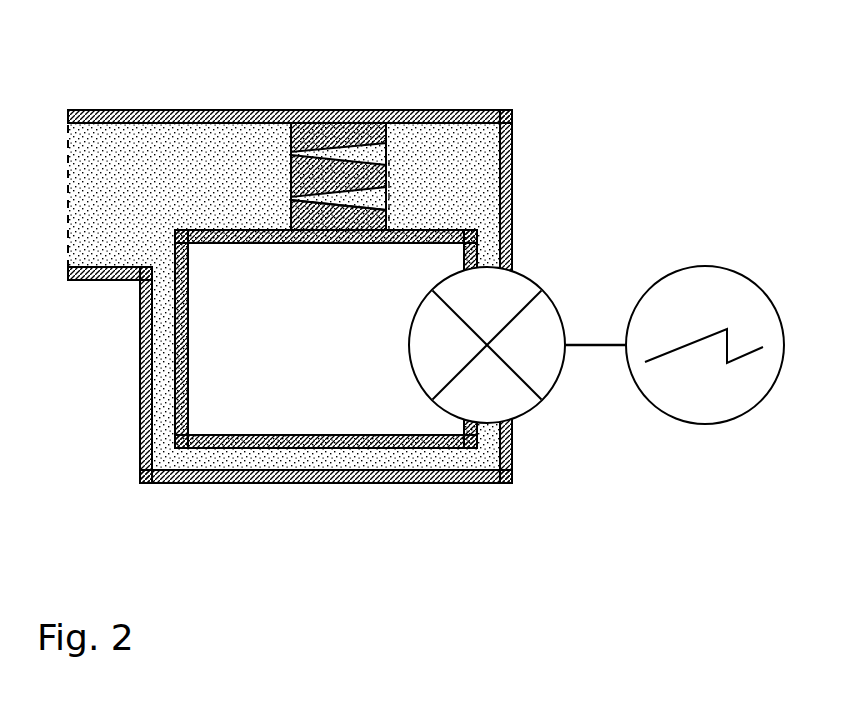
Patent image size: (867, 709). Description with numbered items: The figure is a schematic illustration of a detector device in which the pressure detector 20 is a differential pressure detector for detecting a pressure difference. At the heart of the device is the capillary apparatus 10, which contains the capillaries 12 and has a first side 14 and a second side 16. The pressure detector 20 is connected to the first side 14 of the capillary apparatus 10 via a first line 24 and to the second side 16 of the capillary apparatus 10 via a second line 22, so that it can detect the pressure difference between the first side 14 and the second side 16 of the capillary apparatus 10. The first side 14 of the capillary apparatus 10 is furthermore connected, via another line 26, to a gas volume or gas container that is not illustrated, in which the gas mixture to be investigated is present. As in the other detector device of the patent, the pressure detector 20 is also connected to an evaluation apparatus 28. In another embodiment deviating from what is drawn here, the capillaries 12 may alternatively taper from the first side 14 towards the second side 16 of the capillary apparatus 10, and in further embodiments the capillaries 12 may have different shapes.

The capillary apparatus 10 is at (347, 133).
The capillaries 12 is at (345, 197).
The first side 14 is at (291, 180).
The second side 16 is at (386, 175).
The pressure detector 20 is at (513, 397).
The second line 22 is at (493, 242).
The first line 24 is at (163, 340).
The line 26 is at (140, 133).
The evaluation apparatus 28 is at (713, 397).